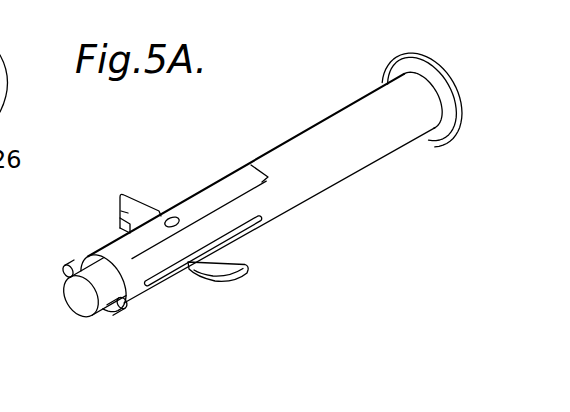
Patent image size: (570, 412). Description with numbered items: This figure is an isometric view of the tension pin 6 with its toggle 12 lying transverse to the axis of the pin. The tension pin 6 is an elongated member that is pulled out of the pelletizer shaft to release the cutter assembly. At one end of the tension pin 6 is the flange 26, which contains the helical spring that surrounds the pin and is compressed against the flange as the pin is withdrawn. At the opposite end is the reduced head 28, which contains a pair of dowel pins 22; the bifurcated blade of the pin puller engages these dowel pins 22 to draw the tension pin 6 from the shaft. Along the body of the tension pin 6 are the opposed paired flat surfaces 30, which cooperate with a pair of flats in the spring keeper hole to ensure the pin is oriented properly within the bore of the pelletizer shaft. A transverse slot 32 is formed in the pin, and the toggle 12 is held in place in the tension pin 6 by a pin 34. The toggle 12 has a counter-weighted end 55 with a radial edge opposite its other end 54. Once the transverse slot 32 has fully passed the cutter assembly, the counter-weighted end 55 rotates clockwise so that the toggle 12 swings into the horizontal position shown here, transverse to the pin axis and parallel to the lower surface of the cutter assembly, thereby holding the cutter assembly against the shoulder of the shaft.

The tension pin 6 is at (324, 131).
The toggle 12 is at (142, 213).
The dowel pins 22 is at (63, 266).
The flange 26 is at (435, 138).
The reduced head 28 is at (82, 300).
The opposed paired flat surfaces 30 is at (232, 190).
The transverse slot 32 is at (153, 283).
The pin 34 is at (173, 217).
The other end of toggle 54 is at (127, 216).
The counter-weighted end 55 is at (238, 265).